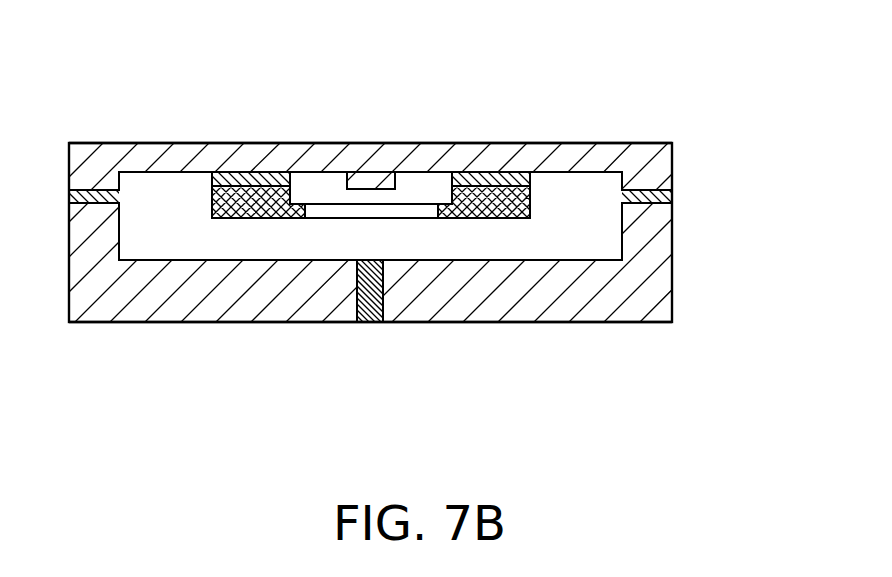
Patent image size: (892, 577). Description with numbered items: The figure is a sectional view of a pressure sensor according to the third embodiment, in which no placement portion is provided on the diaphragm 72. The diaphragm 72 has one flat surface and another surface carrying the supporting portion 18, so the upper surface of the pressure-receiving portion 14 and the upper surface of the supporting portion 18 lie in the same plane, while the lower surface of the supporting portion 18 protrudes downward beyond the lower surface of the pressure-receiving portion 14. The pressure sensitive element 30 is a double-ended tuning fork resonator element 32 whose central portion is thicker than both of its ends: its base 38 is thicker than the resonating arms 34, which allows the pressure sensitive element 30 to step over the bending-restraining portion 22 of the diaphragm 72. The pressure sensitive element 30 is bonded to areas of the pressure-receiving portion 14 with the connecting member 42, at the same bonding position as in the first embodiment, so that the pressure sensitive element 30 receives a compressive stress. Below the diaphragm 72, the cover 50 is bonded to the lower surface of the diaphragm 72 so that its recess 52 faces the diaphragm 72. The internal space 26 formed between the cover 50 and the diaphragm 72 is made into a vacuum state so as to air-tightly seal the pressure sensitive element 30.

The pressure-receiving portion 14 is at (158, 143).
The supporting portion 18 is at (678, 180).
The bending-restraining portion 22 is at (346, 175).
The internal space 26 is at (593, 228).
The pressure sensitive element 30 is at (338, 220).
The double-ended tuning fork resonator element 32 is at (430, 219).
The resonating arms 34 is at (388, 219).
The base 38 is at (211, 206).
The connecting member 42 is at (212, 179).
The cover 50 is at (617, 323).
The recess 52 is at (512, 260).
The diaphragm 72 is at (580, 142).